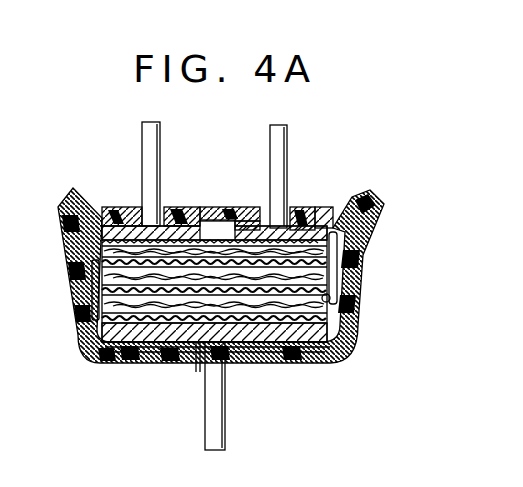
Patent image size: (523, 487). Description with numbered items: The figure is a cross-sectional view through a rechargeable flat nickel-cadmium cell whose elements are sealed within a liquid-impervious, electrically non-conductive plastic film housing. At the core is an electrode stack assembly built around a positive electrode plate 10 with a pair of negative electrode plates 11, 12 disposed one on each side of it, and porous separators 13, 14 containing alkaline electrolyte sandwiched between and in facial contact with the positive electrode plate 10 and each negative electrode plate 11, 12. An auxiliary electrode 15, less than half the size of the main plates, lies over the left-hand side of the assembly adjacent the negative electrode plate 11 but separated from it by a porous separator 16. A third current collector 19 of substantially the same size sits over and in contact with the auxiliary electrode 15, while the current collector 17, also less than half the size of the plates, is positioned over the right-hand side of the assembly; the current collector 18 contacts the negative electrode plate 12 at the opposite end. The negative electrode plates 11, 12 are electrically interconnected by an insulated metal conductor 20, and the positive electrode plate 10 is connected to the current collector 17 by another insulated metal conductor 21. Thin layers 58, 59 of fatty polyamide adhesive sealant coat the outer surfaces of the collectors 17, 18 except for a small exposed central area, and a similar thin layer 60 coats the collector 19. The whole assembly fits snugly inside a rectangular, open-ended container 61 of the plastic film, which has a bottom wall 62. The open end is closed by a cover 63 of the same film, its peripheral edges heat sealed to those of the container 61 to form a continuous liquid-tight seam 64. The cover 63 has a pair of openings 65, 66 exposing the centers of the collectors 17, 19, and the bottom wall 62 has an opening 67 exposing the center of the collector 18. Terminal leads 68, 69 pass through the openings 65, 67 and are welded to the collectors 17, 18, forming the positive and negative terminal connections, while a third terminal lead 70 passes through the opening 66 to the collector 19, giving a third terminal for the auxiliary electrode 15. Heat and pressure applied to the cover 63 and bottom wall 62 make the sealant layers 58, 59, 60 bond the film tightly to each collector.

The positive electrode plate 10 is at (326, 300).
The negative electrode plate 11 is at (340, 274).
The negative electrode plate 12 is at (297, 350).
The porous separator 13 is at (325, 295).
The porous separator 14 is at (308, 347).
The auxiliary electrode 15 is at (104, 244).
The porous separator 16 is at (324, 248).
The current collector 17 is at (313, 225).
The current collector 18 is at (275, 337).
The third current collector 19 is at (102, 236).
The insulated metal conductor 20 is at (92, 292).
The insulated metal conductor 21 is at (330, 263).
The thin layer of adhesive sealant 58 is at (250, 220).
The thin layer of adhesive sealant 59 is at (250, 342).
The thin layer of adhesive sealant 60 is at (190, 220).
The container 61 is at (102, 355).
The bottom wall 62 is at (170, 357).
The cover 63 is at (212, 207).
The seam 64 is at (73, 208).
The opening 65 is at (292, 215).
The opening 66 is at (138, 210).
The opening 67 is at (197, 346).
The terminal lead 68 is at (280, 153).
The terminal lead 69 is at (218, 428).
The third terminal lead 70 is at (143, 135).